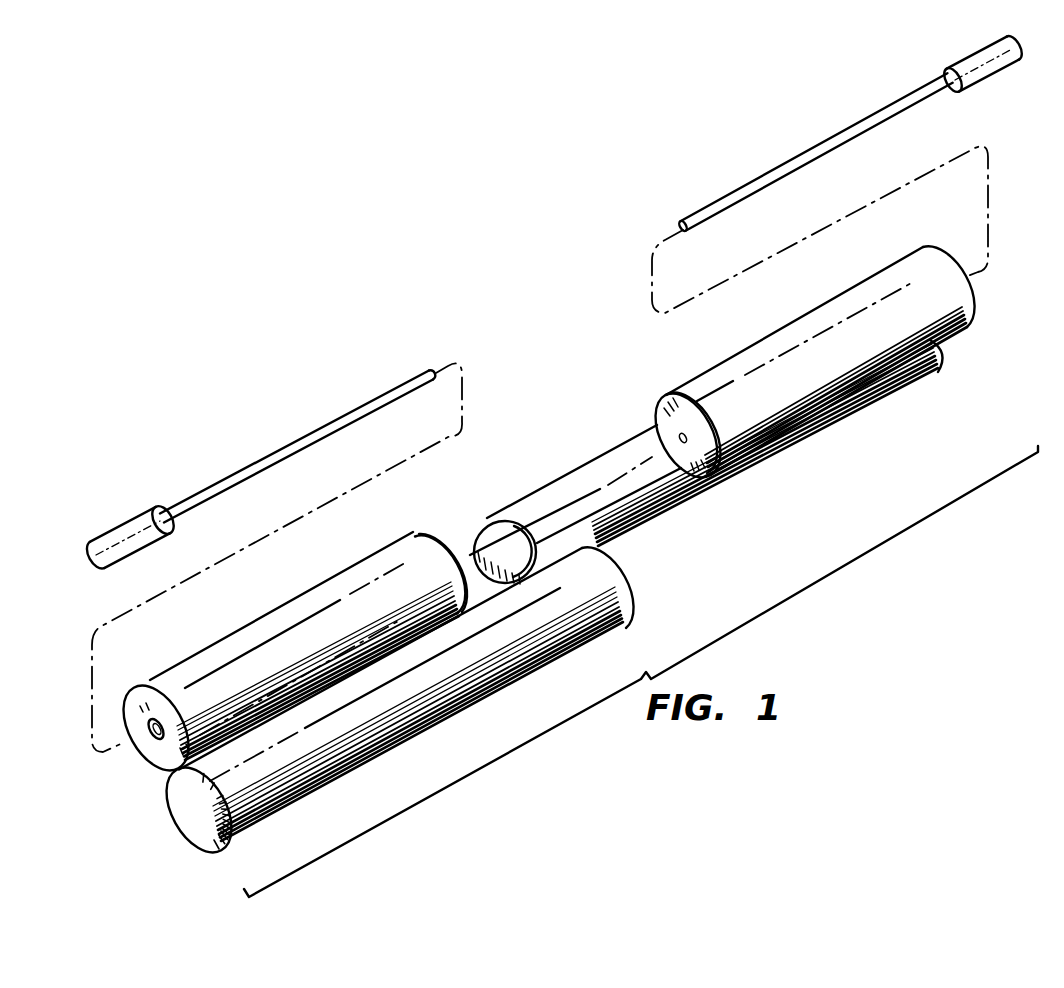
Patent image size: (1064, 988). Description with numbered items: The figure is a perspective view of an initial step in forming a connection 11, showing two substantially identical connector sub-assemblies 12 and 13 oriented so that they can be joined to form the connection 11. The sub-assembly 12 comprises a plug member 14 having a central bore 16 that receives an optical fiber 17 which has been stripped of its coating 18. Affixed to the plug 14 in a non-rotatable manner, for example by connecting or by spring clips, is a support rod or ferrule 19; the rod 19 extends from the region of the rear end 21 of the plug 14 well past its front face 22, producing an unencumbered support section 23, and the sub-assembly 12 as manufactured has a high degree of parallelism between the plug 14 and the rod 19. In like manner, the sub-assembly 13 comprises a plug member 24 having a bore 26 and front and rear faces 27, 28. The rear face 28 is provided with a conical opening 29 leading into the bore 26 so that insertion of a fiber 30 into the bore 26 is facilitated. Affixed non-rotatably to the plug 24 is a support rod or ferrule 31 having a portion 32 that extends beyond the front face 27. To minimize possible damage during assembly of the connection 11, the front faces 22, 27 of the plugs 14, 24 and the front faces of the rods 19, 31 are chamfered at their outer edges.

The connection 11 is at (712, 590).
The connector sub-assembly 12 is at (804, 346).
The connector sub-assembly 13 is at (360, 613).
The plug member 14 is at (729, 361).
The central bore 16 is at (660, 422).
The optical fiber 17 is at (827, 141).
The coating 18 is at (988, 78).
The support rod 19 is at (762, 468).
The rear end 21 is at (975, 284).
The front face 22 is at (680, 437).
The support section 23 is at (540, 488).
The plug member 24 is at (365, 558).
The bore 26 is at (152, 733).
The front face 27 is at (422, 540).
The rear face 28 is at (142, 690).
The conical opening 29 is at (156, 745).
The fiber 30 is at (291, 445).
The support rod 31 is at (323, 787).
The portion 32 is at (466, 612).